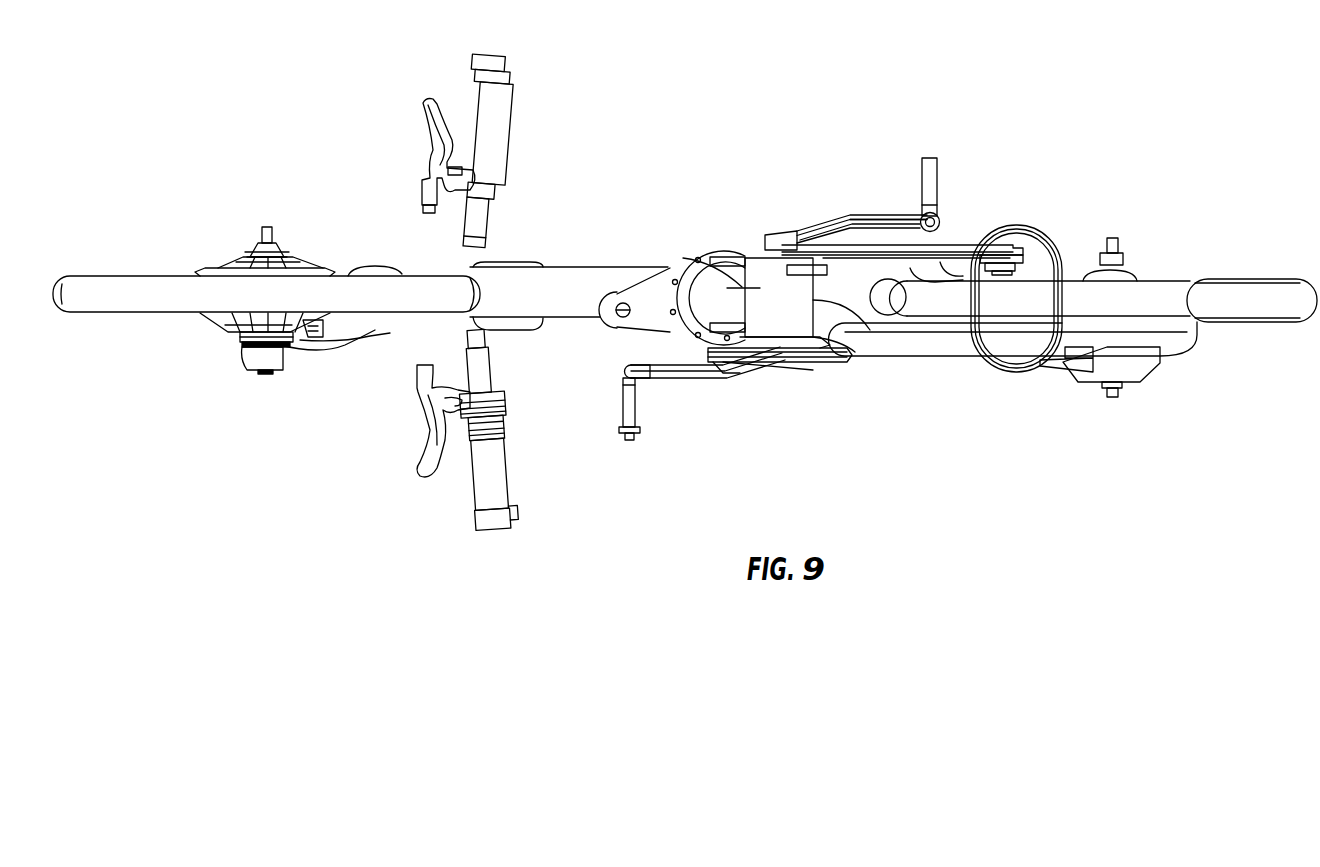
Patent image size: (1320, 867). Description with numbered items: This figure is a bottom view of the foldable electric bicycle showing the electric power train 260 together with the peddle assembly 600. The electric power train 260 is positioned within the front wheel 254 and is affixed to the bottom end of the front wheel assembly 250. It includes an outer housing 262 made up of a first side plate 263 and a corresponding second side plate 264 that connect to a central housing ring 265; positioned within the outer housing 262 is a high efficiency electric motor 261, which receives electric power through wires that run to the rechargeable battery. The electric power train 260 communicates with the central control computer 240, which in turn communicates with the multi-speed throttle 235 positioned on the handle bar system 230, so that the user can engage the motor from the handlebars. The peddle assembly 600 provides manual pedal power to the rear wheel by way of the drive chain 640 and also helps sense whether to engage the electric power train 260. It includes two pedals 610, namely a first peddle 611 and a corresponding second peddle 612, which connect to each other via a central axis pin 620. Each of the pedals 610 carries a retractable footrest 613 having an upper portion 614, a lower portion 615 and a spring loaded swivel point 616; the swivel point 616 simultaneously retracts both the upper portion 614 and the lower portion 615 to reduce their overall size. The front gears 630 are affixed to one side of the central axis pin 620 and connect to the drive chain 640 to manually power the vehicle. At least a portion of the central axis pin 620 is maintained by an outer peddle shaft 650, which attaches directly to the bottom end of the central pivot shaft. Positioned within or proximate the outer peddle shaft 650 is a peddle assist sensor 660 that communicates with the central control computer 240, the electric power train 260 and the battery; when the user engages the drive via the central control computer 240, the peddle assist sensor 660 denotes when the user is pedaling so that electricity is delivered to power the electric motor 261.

The handle bar system 230 is at (492, 150).
The multi-speed throttle 235 is at (505, 410).
The central control computer 240 is at (520, 332).
The front wheel assembly 250 is at (125, 283).
The front wheel 254 is at (98, 300).
The electric power train 260 is at (215, 265).
The high efficiency electric motor 261 is at (215, 332).
The outer housing 262 is at (240, 266).
The first side plate 263 is at (233, 345).
The second side plate 264 is at (290, 265).
The central housing ring 265 is at (356, 270).
The peddle assembly 600 is at (785, 364).
The pedals 610 is at (853, 213).
The first peddle 611 is at (672, 380).
The second peddle 612 is at (882, 216).
The retractable footrest 613 is at (932, 183).
The upper portion 614 is at (926, 178).
The lower portion 615 is at (935, 202).
The spring loaded swivel point 616 is at (625, 374).
The central axis pin 620 is at (755, 252).
The front gears 630 is at (808, 365).
The drive chain 640 is at (900, 366).
The outer peddle shaft 650 is at (690, 278).
The peddle assist sensor 660 is at (773, 270).